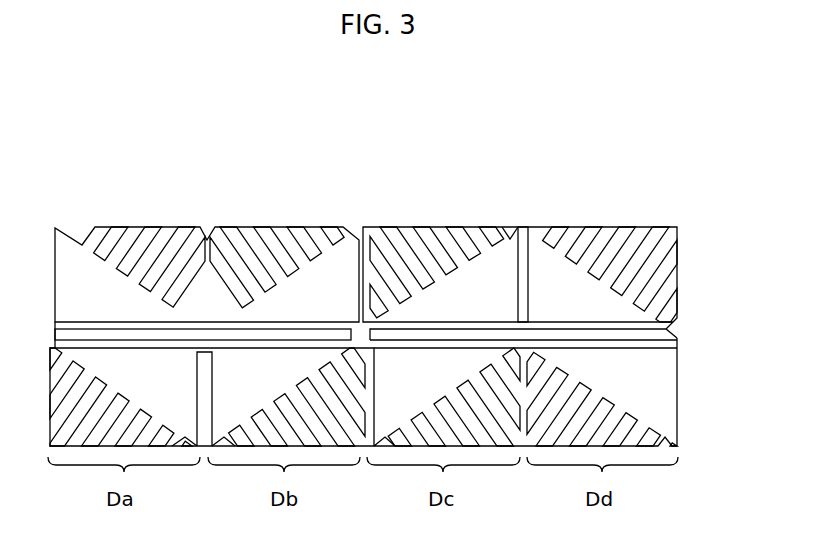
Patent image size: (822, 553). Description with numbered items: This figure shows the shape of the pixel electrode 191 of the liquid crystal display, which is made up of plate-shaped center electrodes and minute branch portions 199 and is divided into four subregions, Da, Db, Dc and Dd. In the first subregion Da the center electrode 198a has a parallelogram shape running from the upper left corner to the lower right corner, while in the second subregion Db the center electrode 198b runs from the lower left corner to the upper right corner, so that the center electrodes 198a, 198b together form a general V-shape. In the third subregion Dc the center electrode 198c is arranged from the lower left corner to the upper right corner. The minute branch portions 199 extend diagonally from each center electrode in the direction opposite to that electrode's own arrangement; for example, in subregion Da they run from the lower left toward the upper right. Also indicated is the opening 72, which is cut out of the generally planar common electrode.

The pixel electrode 191 is at (677, 403).
The minute branch portions 199 is at (190, 228).
The opening 72 is at (330, 335).
The center electrode of the first subregion 198a is at (76, 262).
The center electrode of the second subregion 198b is at (298, 300).
The center electrode of the third subregion 198c is at (460, 300).